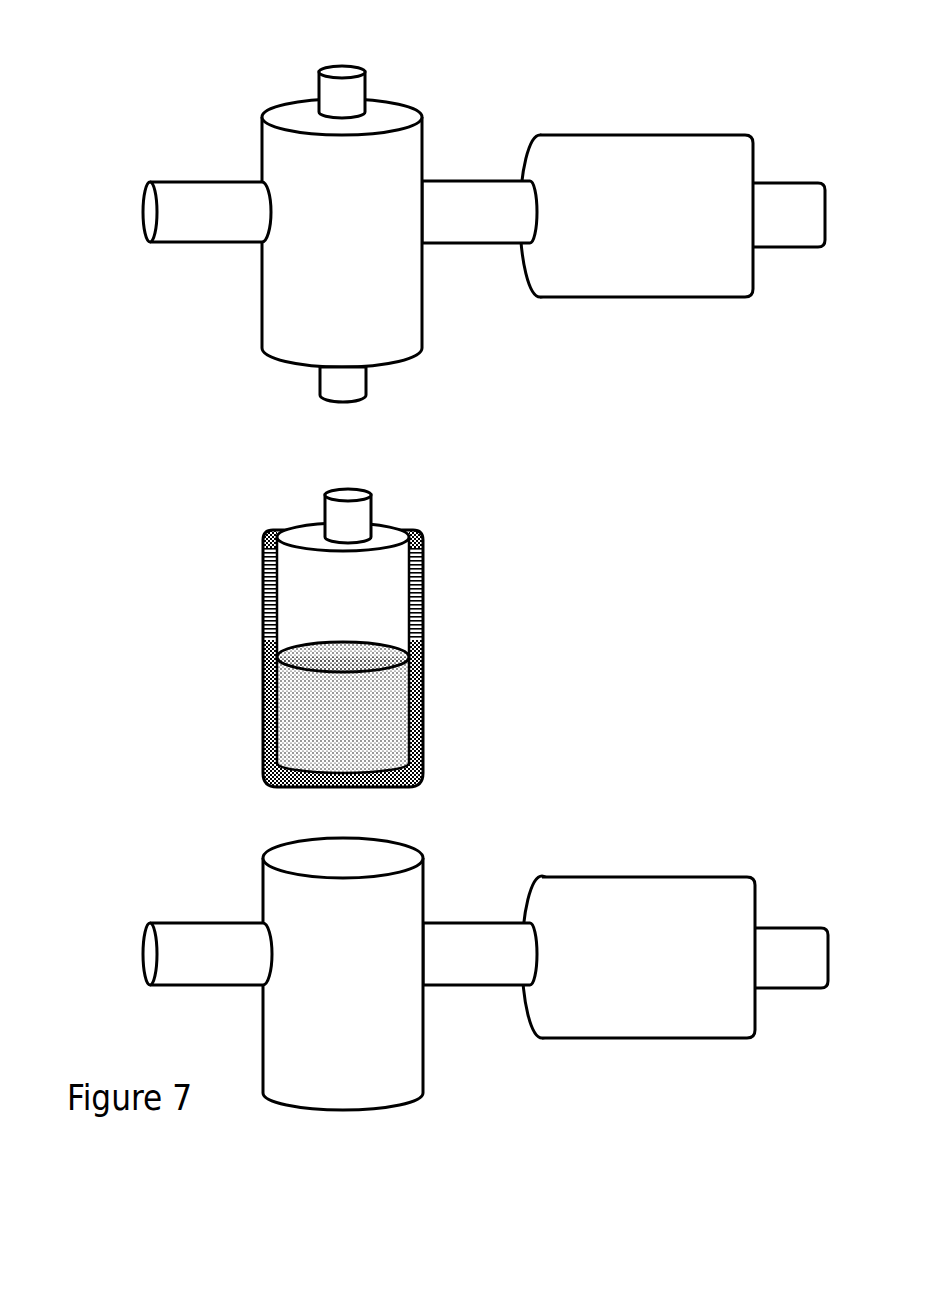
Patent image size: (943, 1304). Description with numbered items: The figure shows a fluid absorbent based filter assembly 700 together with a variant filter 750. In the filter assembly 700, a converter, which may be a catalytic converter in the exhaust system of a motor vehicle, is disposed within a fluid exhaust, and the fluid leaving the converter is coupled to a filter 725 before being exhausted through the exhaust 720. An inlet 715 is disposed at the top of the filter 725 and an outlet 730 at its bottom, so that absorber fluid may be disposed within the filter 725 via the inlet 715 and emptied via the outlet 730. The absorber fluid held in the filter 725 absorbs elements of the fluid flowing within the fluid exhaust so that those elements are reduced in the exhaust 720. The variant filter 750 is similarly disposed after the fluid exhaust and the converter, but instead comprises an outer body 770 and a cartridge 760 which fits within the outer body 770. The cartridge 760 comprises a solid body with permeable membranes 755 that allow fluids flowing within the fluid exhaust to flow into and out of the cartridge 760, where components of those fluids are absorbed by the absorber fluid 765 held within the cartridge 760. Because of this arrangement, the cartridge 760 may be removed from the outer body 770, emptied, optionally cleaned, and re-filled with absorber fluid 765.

The fluid absorbent based filter assembly 700 is at (668, 379).
The inlet 715 is at (340, 102).
The exhaust 720 is at (223, 222).
The filter 725 is at (290, 319).
The outlet 730 is at (333, 387).
The variant filter 750 is at (675, 520).
The permeable membranes 755 is at (263, 582).
The cartridge 760 is at (263, 695).
The absorber fluid 765 is at (332, 738).
The outer body 770 is at (277, 900).